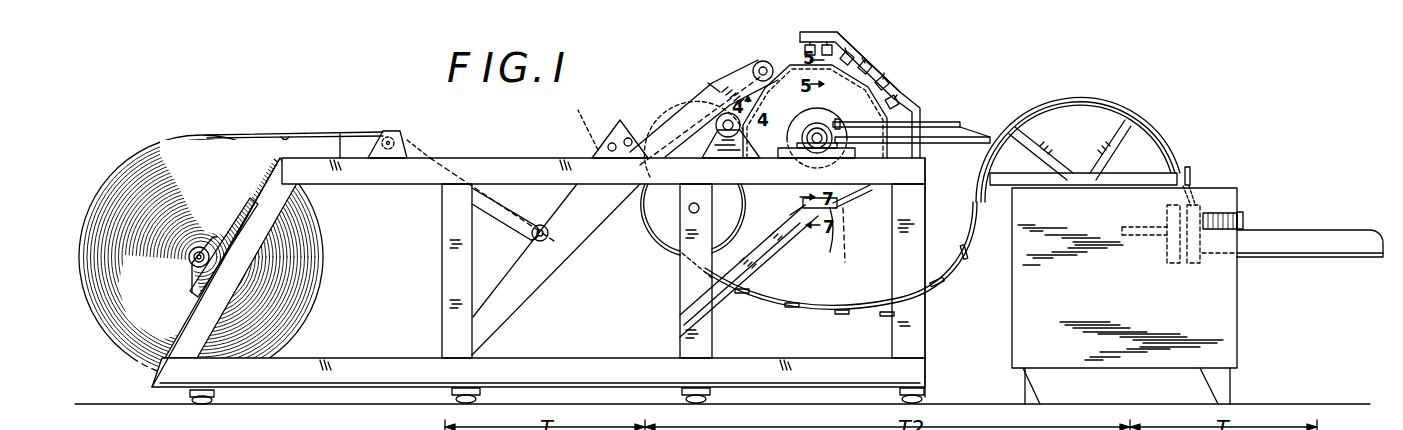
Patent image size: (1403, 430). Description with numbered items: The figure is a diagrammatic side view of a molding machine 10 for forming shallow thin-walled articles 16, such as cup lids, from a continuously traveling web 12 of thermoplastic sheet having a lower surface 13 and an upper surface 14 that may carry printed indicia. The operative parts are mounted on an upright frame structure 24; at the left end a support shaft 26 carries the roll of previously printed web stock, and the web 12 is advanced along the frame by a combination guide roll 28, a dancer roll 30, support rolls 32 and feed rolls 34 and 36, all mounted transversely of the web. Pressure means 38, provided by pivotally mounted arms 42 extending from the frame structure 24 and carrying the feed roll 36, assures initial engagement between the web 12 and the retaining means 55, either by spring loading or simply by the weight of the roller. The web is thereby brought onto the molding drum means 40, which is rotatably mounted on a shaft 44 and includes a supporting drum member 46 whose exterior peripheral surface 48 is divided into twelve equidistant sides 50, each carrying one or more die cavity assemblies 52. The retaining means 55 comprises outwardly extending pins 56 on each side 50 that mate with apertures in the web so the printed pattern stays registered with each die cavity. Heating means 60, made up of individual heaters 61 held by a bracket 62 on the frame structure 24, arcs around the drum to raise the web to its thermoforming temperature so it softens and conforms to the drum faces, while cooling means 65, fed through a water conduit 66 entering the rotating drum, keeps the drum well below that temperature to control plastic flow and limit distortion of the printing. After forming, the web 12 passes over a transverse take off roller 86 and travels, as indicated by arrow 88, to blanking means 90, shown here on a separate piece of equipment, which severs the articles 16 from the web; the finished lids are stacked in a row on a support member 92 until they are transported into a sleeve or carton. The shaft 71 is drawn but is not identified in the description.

The molding machine 10 is at (512, 138).
The web 12 is at (340, 132).
The lower surface 13 is at (298, 124).
The upper surface 14 is at (263, 134).
The thin walled articles 16 is at (824, 306).
The frame structure 24 is at (359, 375).
The support shaft 26 is at (190, 263).
The guide roll 28 is at (399, 128).
The dancer roll 30 is at (548, 241).
The support rolls 32 is at (620, 118).
The feed roll 34 is at (714, 122).
The feed roll 36 is at (765, 60).
The pressure means 38 is at (722, 86).
The molding drum means 40 is at (749, 271).
The pivotally mounted arms 42 is at (738, 84).
The shaft 44 is at (818, 124).
The drum member 46 is at (860, 118).
The exterior peripheral surface 48 is at (808, 70).
The sides 50 is at (837, 225).
The die cavity assemblies 52 is at (860, 243).
The retaining means 55 is at (811, 237).
The pins 56 is at (850, 200).
The heating means 60 is at (922, 96).
The heaters 61 is at (880, 76).
The bracket 62 is at (893, 70).
The cooling means 65 is at (998, 129).
The conduit 66 is at (976, 146).
The shaft 71 is at (962, 125).
The take off roller 86 is at (666, 240).
The arrow 88 is at (970, 268).
The blanking means 90 is at (1238, 195).
The support member 92 is at (1325, 256).